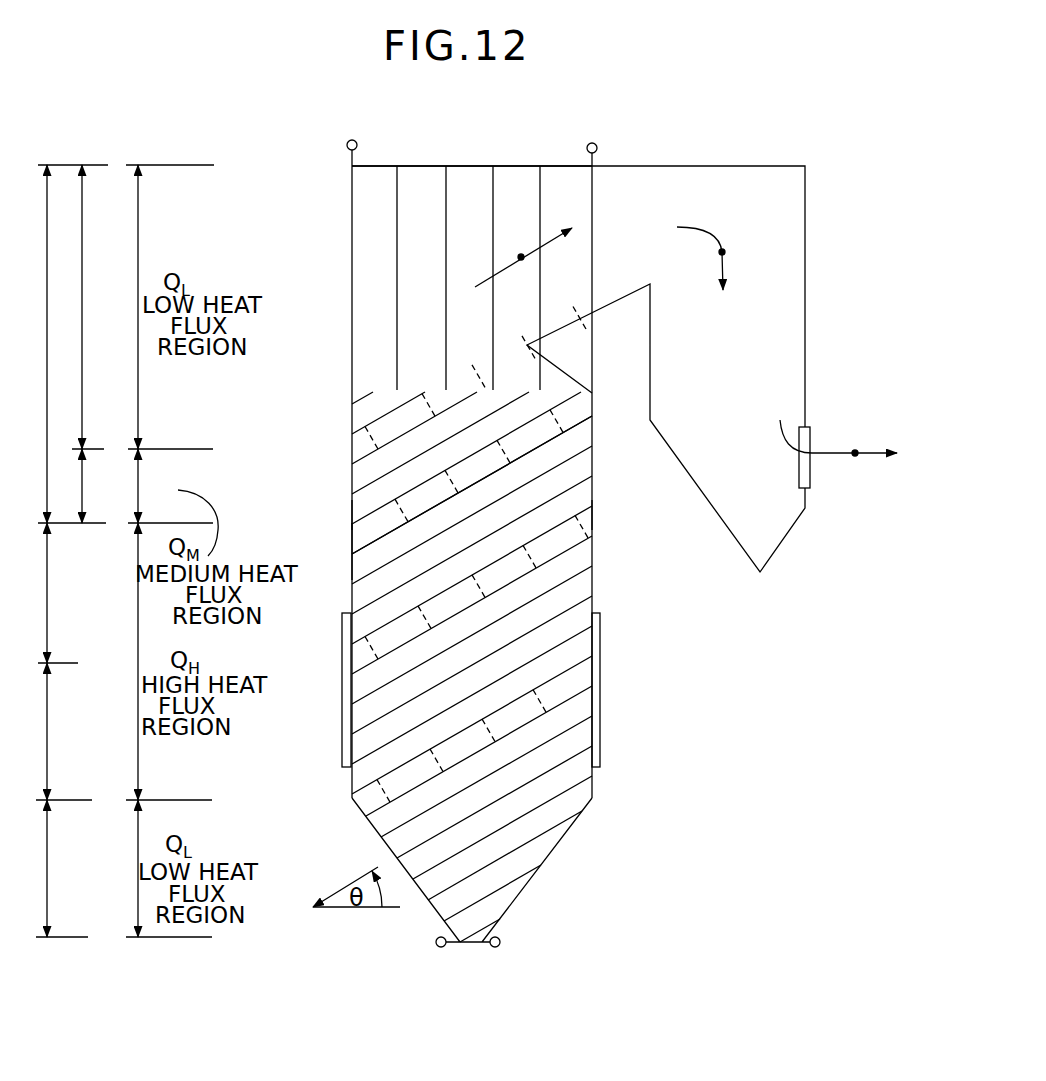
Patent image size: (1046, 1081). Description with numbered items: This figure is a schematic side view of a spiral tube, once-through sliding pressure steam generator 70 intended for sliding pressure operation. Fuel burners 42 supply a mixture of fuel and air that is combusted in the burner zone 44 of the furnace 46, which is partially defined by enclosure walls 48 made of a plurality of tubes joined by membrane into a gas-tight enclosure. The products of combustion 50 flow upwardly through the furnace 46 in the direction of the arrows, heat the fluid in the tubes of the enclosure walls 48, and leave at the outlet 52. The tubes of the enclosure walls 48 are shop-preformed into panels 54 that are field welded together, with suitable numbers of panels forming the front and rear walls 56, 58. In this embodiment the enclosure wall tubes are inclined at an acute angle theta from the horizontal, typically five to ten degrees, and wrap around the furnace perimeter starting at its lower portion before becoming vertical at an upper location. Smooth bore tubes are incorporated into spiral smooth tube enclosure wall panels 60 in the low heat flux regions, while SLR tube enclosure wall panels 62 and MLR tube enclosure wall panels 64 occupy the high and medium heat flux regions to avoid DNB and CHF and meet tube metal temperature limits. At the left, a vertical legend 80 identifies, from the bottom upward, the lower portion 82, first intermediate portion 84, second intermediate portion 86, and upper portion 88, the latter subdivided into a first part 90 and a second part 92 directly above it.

The fuel burners 42 is at (341, 628).
The burner zone 44 is at (533, 679).
The furnace 46 is at (372, 556).
The enclosure walls 48 is at (476, 182).
The products of combustion 50 is at (521, 257).
The outlet 52 is at (807, 480).
The panels 54 is at (408, 202).
The front wall 56 is at (342, 516).
The rear wall 58 is at (600, 518).
The spiral smooth tube enclosure wall panels 60 is at (333, 268).
The SLR tube enclosure wall panels 62 is at (473, 538).
The MLR tube enclosure wall panels 64 is at (405, 482).
The spiral tube, once-through sliding pressure steam generator 70 is at (622, 134).
The vertical legend 80 is at (60, 152).
The lower portion 82 is at (65, 868).
The first intermediate portion 84 is at (65, 731).
The second intermediate portion 86 is at (64, 593).
The upper portion 88 is at (64, 344).
The first part 90 is at (99, 486).
The second part 92 is at (100, 307).